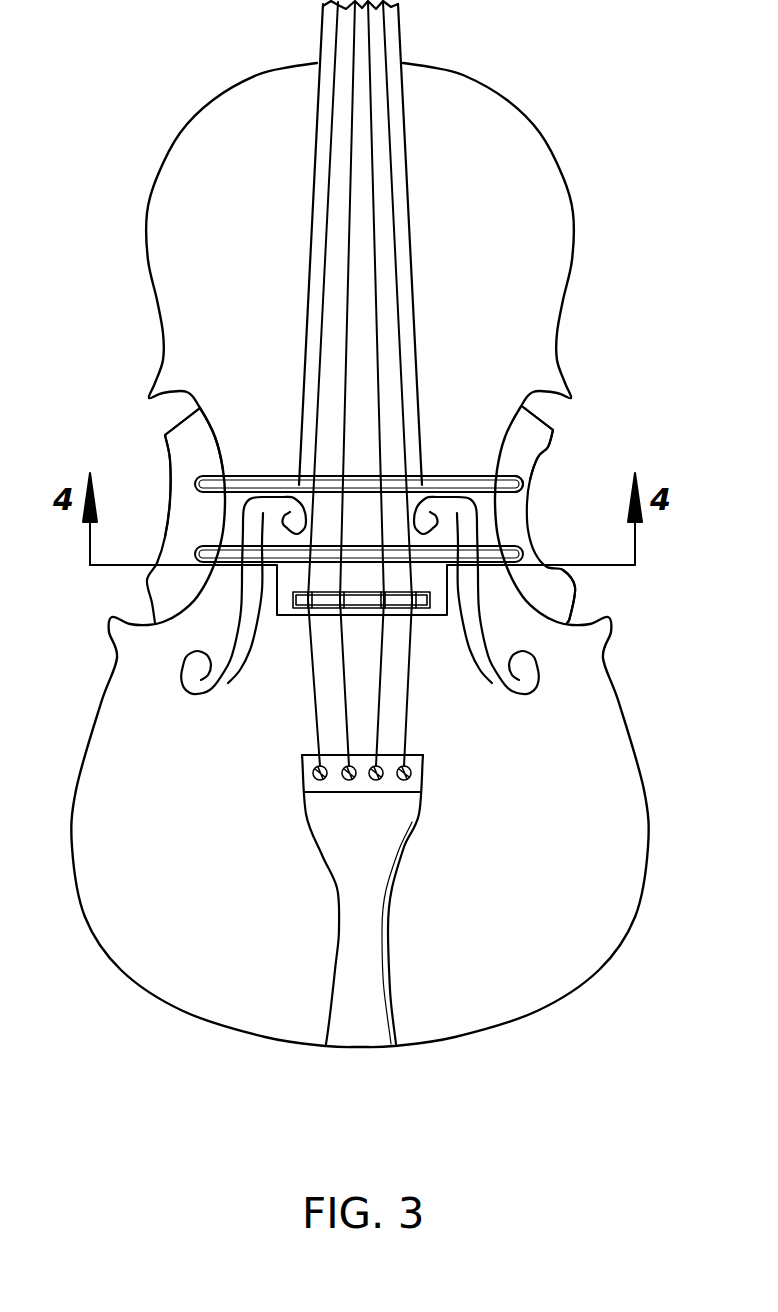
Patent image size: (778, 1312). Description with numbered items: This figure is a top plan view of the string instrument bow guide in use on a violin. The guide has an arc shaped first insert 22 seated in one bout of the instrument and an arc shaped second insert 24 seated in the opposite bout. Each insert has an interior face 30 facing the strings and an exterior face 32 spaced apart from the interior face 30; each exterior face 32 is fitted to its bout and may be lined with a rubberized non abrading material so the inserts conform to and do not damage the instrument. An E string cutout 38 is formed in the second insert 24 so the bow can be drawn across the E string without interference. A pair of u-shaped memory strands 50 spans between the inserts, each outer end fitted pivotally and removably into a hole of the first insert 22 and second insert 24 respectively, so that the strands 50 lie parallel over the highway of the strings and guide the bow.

The first insert 22 is at (165, 435).
The second insert 24 is at (548, 425).
The interior face 30 is at (163, 448).
The exterior face 32 is at (220, 437).
The E string cutout 38 is at (526, 488).
The u-shaped memory strand 50 is at (462, 476).